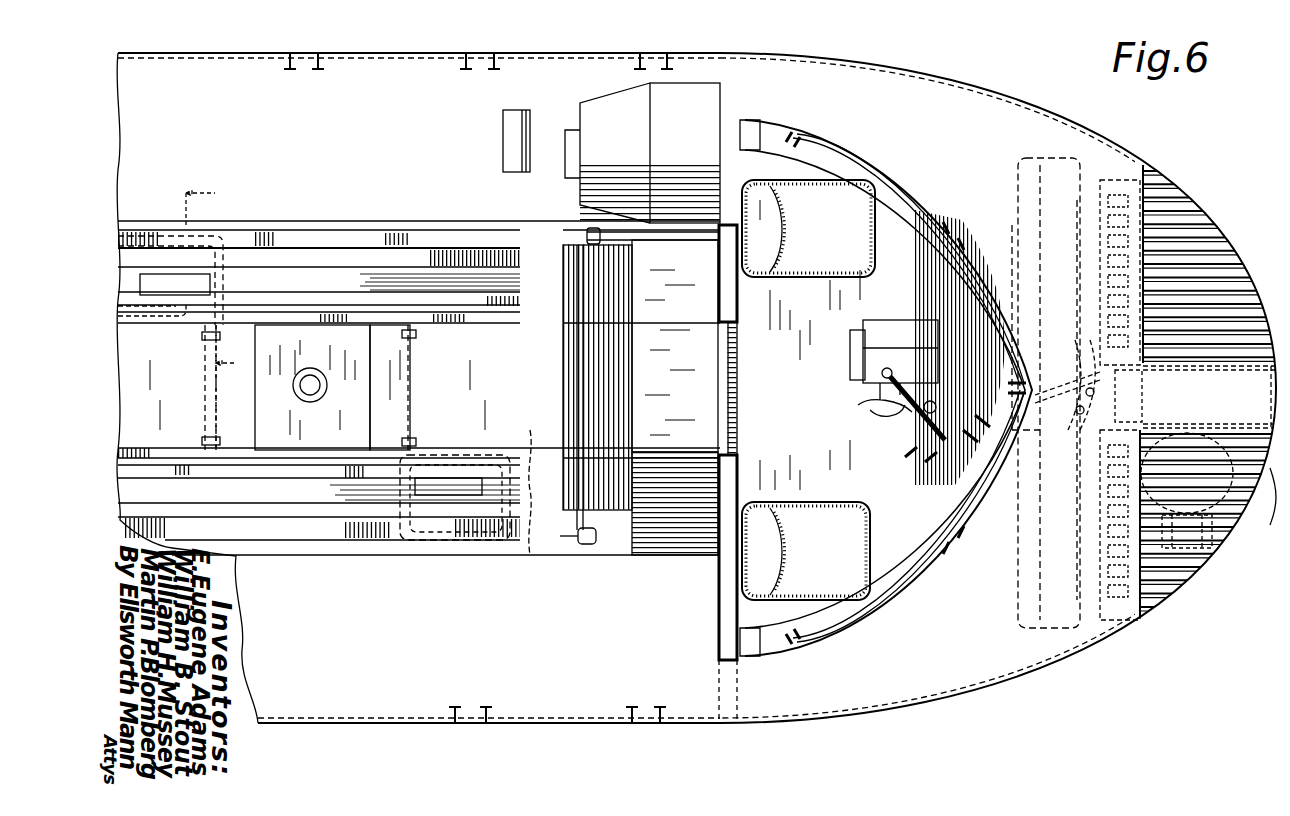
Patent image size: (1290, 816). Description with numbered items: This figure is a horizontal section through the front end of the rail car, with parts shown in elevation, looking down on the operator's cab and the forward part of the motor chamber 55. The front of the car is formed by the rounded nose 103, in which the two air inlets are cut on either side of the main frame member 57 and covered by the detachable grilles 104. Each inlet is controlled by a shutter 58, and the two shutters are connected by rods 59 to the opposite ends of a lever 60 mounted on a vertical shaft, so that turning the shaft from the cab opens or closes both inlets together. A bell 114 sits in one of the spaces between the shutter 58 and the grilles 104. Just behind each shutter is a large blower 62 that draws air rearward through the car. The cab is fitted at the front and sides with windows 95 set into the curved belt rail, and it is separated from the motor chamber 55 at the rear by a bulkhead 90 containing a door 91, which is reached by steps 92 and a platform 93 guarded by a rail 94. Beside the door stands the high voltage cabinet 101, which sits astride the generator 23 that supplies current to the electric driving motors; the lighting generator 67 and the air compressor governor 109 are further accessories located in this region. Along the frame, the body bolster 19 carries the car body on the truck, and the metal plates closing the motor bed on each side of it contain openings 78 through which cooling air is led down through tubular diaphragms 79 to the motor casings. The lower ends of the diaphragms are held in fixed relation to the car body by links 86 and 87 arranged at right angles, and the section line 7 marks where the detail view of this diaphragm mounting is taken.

The section line 7- 7 is at (218, 315).
The body bolster 19 is at (320, 396).
The generator 23 is at (612, 512).
The motor chamber 55 is at (490, 640).
The main frame member 57 is at (1143, 392).
The shutter 58 is at (1148, 210).
The rods 59 is at (1120, 205).
The lever 60 is at (1072, 385).
The blower 62 is at (1045, 178).
The lighting generator 67 is at (642, 153).
The openings 78 is at (158, 290).
The tubular diaphragms 79 is at (232, 262).
The link 86 is at (212, 398).
The link 87 is at (528, 456).
The bulkhead 90 is at (740, 322).
The door 91 is at (738, 396).
The steps 92 is at (678, 557).
The platform 93 is at (675, 346).
The rail 94 is at (585, 545).
The windows 95 is at (870, 175).
The high voltage cabinet 101 is at (549, 252).
The rounded nose 103 is at (1264, 528).
The grilles 104 is at (1240, 262).
The air compressor governor 109 is at (503, 130).
The bell 114 is at (1210, 436).